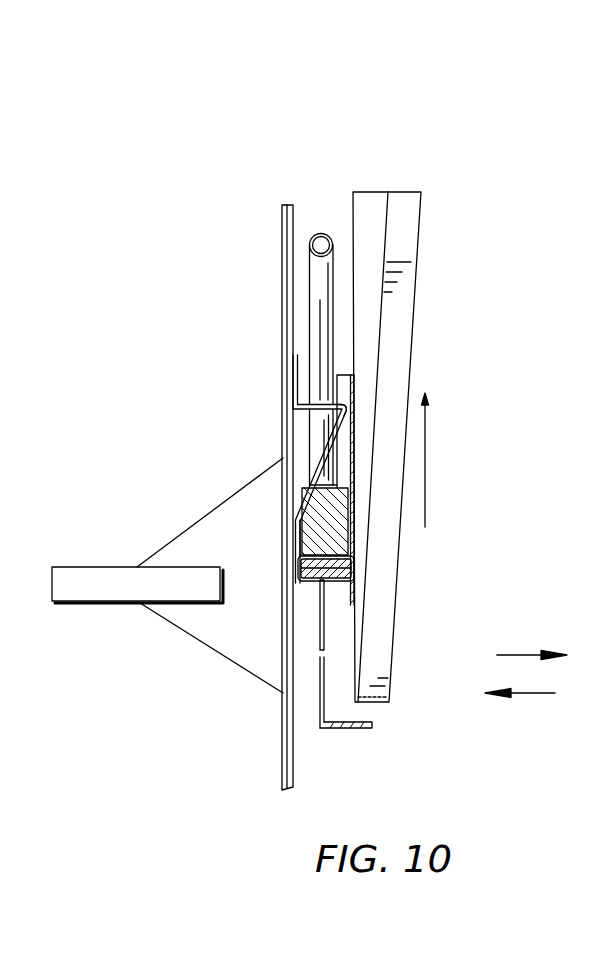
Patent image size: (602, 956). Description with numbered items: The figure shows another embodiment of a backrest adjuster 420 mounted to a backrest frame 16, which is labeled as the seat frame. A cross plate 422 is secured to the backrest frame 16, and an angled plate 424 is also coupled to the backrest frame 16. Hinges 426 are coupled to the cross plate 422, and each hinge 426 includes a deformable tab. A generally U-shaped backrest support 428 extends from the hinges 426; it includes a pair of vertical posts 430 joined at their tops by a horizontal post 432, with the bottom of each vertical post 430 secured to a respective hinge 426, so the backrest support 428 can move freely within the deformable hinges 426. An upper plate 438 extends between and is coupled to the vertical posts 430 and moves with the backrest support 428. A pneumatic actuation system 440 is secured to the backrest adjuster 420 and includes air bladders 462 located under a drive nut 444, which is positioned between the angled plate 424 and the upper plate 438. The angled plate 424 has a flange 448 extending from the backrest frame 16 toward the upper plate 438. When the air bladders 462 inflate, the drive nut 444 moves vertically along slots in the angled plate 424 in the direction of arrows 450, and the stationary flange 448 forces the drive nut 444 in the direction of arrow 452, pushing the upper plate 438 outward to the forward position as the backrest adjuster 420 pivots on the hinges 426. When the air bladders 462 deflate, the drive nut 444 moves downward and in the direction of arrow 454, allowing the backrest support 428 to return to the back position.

The backrest frame 16 is at (98, 566).
The backrest adjuster 420 is at (441, 154).
The cross plate 422 is at (352, 730).
The angled plate 424 is at (295, 363).
The hinge 426 is at (345, 657).
The backrest support 428 is at (296, 287).
The vertical post 430 is at (315, 309).
The horizontal post 432 is at (320, 233).
The upper plate 438 is at (356, 378).
The pneumatic actuation system 440 is at (305, 596).
The drive nut 444 is at (320, 527).
The flange 448 is at (348, 415).
The arrows 450 is at (427, 468).
The arrow 452 is at (526, 654).
The arrow 454 is at (527, 694).
The air bladder 462 is at (361, 567).